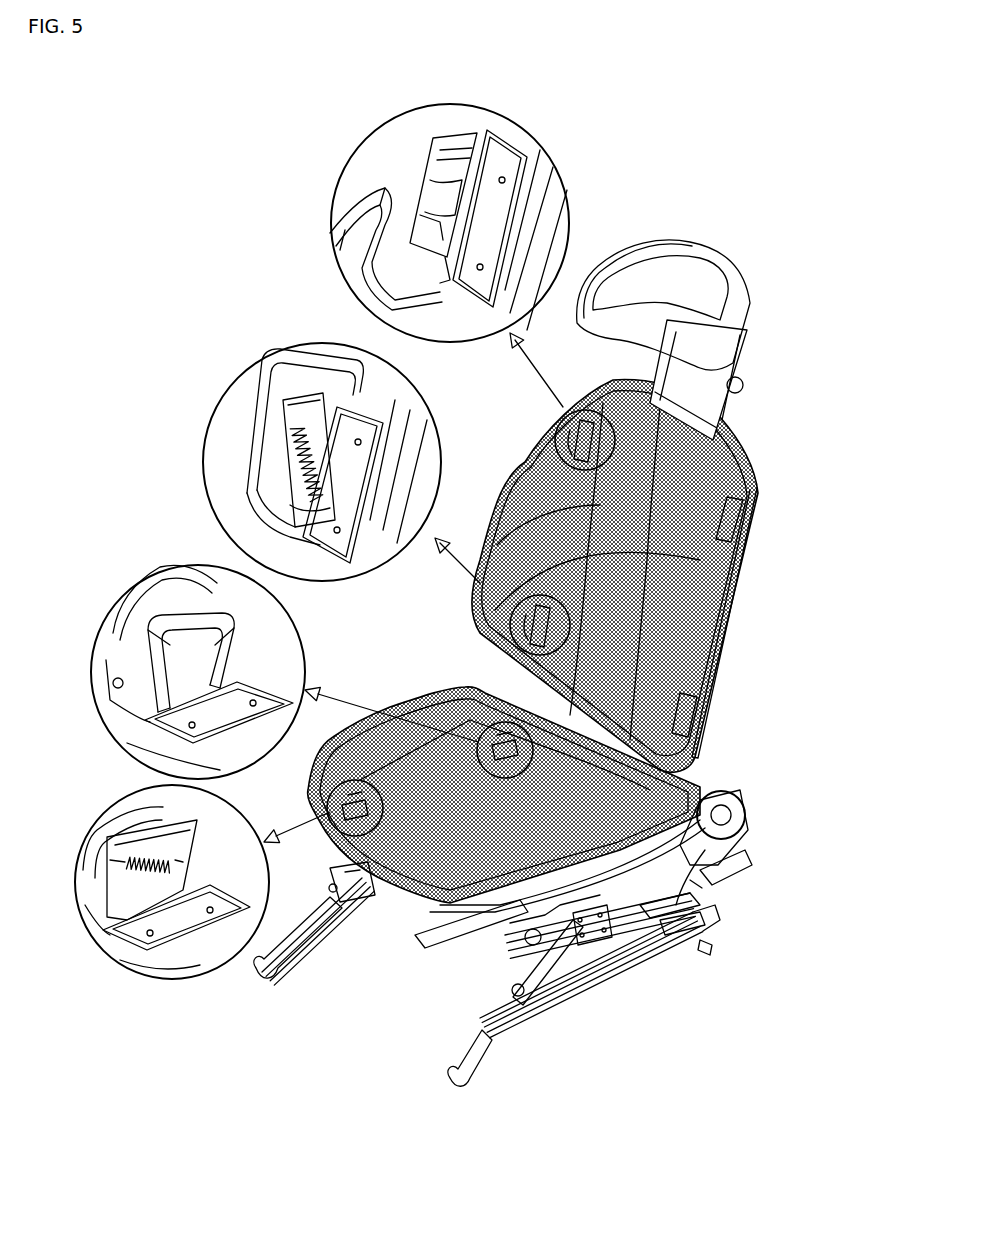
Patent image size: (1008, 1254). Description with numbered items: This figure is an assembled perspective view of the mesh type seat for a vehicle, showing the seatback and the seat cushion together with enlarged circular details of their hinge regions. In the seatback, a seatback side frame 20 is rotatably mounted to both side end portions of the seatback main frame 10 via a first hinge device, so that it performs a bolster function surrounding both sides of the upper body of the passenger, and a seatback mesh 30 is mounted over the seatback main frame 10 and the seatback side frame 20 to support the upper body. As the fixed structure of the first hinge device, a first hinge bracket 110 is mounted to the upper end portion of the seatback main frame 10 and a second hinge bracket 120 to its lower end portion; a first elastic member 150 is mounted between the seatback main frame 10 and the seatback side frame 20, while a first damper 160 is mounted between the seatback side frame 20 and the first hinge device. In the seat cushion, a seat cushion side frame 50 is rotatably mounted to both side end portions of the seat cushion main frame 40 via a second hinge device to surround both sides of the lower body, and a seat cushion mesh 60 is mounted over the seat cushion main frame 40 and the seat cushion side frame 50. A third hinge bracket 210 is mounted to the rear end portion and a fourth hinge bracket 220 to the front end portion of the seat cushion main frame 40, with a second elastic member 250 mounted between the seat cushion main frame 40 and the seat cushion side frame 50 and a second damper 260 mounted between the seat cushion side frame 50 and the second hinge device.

The seatback main frame 10 is at (533, 177).
The seatback side frame 20 is at (375, 163).
The seatback mesh 30 is at (700, 460).
The seat cushion main frame 40 is at (307, 665).
The seat cushion side frame 50 is at (215, 588).
The seat cushion mesh 60 is at (462, 738).
The first hinge bracket 110 is at (500, 157).
The second hinge bracket 120 is at (363, 460).
The first elastic member 150 is at (307, 450).
The first damper 160 is at (447, 182).
The third hinge bracket 210 is at (267, 697).
The fourth hinge bracket 220 is at (180, 927).
The second elastic member 250 is at (133, 857).
The second damper 260 is at (177, 655).